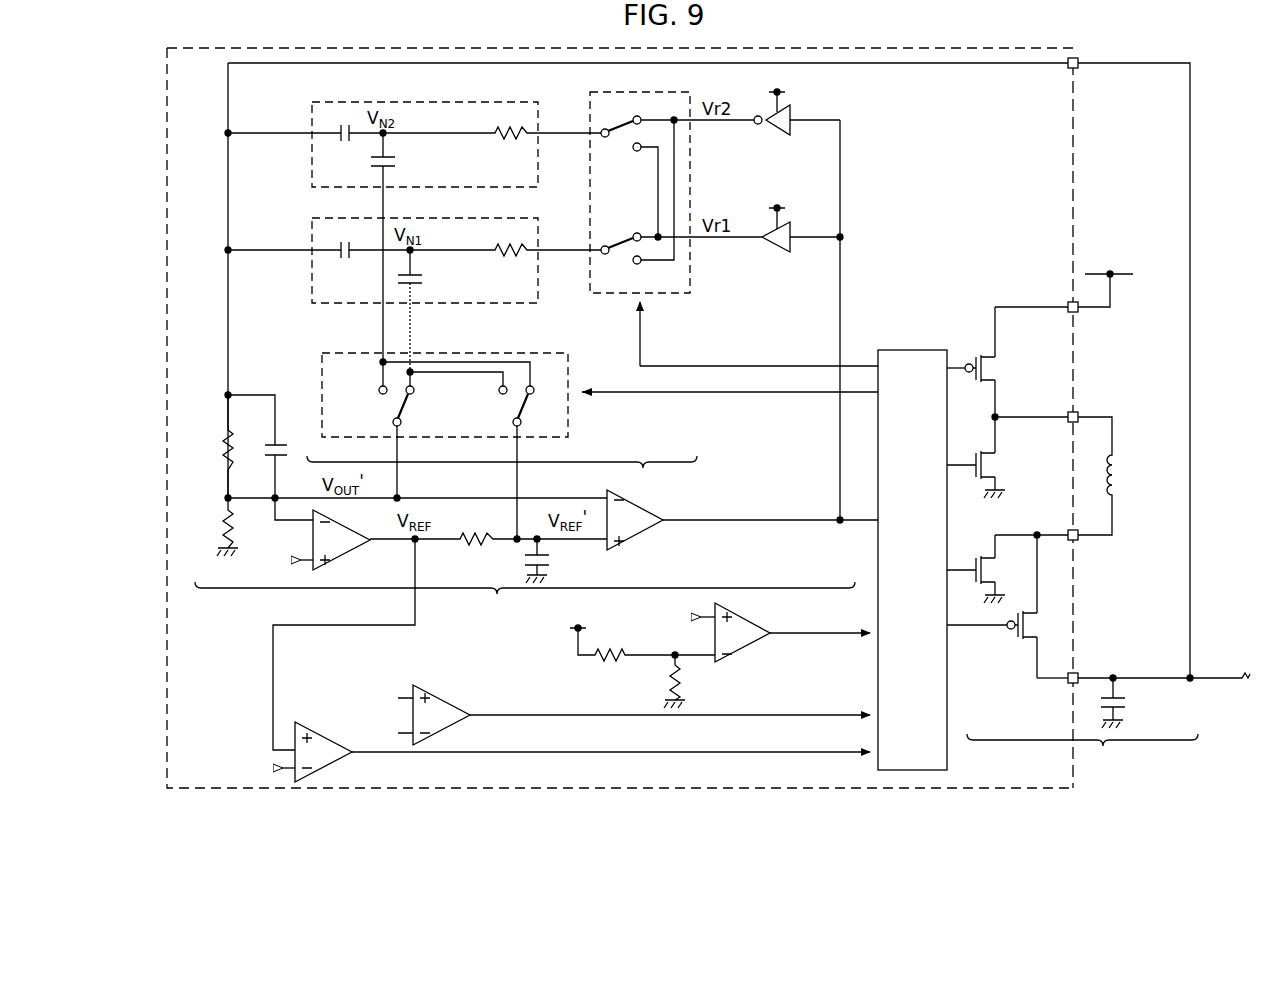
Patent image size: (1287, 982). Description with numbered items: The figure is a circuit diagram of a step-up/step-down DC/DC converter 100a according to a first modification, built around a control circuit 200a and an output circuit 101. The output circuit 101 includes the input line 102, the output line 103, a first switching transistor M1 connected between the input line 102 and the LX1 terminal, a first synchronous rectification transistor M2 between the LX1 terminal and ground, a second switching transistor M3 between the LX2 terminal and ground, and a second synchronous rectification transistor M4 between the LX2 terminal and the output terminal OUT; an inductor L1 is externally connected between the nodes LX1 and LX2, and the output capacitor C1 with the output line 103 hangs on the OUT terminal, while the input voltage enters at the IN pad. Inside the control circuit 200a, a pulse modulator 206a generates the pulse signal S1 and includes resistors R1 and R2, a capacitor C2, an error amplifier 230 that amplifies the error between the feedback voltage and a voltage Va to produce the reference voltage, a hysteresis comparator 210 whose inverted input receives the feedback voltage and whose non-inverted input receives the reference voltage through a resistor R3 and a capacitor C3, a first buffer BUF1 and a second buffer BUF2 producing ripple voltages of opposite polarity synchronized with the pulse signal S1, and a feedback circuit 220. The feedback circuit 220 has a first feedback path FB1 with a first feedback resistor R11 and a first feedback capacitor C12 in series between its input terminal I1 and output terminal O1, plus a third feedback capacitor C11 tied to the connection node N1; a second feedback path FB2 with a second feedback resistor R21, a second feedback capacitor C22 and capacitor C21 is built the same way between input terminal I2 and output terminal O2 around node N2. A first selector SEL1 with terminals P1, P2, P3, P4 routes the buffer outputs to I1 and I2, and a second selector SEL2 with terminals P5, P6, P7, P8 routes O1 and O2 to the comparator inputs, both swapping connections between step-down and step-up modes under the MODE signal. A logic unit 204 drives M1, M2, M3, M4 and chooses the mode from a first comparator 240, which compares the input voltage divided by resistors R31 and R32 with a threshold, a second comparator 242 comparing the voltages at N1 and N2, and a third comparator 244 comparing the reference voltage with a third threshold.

The step-up/step-down DC/DC converter 100a is at (690, 817).
The control circuit 200a is at (167, 764).
The output circuit 101 is at (1082, 754).
The input line 102 is at (1120, 268).
The output line 103 is at (1200, 672).
The logic unit 204 is at (905, 348).
The pulse modulator 206a is at (525, 600).
The hysteresis comparator 210 is at (650, 530).
The feedback circuit 220 is at (502, 475).
The error amplifier 230 is at (365, 552).
The first comparator 240 is at (752, 624).
The second comparator 242 is at (433, 686).
The third comparator 244 is at (312, 719).
The first feedback path FB1 is at (312, 241).
The second feedback path FB2 is at (312, 124).
The input terminal of the first feedback path I1 is at (539, 246).
The input terminal of the second feedback path I2 is at (539, 130).
The third feedback capacitor C11 is at (345, 262).
The first feedback capacitor C12 is at (422, 282).
The capacitor of the second feedback path C21 is at (345, 145).
The second feedback capacitor C22 is at (395, 166).
The first feedback resistor R11 is at (510, 262).
The second feedback resistor R21 is at (510, 145).
The connection node N1 is at (415, 252).
The node N2 is at (390, 136).
The output terminal of the first feedback path O1 is at (412, 311).
The output terminal of the second feedback path O2 is at (392, 193).
The first terminal P1 is at (692, 244).
The second terminal P2 is at (692, 127).
The third terminal P3 is at (586, 255).
The fourth terminal P4 is at (586, 138).
The fifth terminal P5 is at (413, 354).
The sixth terminal P6 is at (378, 352).
The seventh terminal P7 is at (402, 439).
The eighth terminal P8 is at (522, 439).
The first selector SEL1 is at (640, 95).
The second selector SEL2 is at (322, 374).
The first buffer BUF1 is at (780, 255).
The second buffer BUF2 is at (780, 138).
The pulse signal S1 is at (840, 333).
The mode signal MODE is at (730, 347).
The resistor R1 is at (220, 444).
The resistor R2 is at (220, 573).
The resistor R3 is at (476, 550).
The capacitor C2 is at (268, 448).
The capacitor C3 is at (552, 560).
The resistor R31 is at (608, 666).
The resistor R32 is at (684, 684).
The first switching transistor M1 is at (998, 370).
The first synchronous rectification transistor M2 is at (998, 466).
The second switching transistor M3 is at (980, 552).
The second synchronous rectification transistor M4 is at (1022, 647).
The inductor L1 is at (1120, 474).
The output capacitor C1 is at (1128, 705).
The input pin IN is at (1080, 314).
The first switching node LX1 is at (1080, 410).
The second switching node LX2 is at (1080, 545).
The output terminal OUT is at (1080, 670).